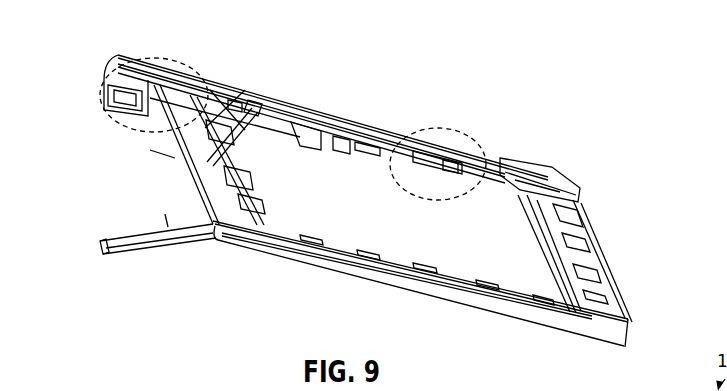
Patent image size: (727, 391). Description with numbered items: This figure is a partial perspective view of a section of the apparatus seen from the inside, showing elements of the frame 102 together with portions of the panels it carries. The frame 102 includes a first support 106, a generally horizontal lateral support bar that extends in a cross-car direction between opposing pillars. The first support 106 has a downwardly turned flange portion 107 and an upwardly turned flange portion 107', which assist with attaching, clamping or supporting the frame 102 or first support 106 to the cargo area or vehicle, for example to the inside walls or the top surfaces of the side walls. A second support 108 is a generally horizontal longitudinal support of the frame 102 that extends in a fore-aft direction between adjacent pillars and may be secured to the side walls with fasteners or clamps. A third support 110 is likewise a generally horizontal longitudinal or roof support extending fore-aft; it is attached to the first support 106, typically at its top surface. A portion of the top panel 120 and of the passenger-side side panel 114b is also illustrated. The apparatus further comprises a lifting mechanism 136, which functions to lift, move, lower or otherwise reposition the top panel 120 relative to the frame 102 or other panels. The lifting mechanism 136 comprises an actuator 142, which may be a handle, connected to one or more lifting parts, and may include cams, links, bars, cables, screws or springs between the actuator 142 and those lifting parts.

The frame 102 is at (524, 126).
The first support 106 is at (120, 237).
The downwardly turned flange portion 107 is at (97, 280).
The upwardly turned flange portion 107' is at (151, 195).
The second support 108 is at (381, 278).
The third support 110 is at (345, 127).
The side panel 114b is at (420, 239).
The top panel 120 is at (236, 104).
The lifting mechanism 136 is at (138, 151).
The actuator 142 is at (246, 147).